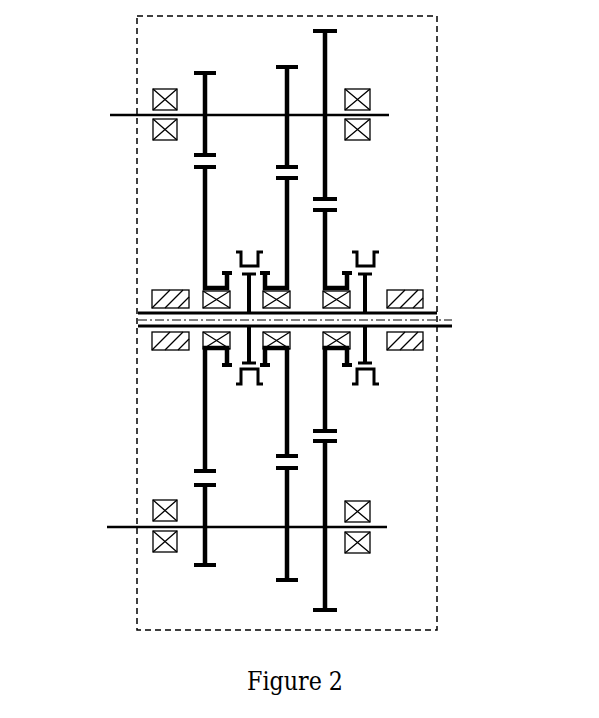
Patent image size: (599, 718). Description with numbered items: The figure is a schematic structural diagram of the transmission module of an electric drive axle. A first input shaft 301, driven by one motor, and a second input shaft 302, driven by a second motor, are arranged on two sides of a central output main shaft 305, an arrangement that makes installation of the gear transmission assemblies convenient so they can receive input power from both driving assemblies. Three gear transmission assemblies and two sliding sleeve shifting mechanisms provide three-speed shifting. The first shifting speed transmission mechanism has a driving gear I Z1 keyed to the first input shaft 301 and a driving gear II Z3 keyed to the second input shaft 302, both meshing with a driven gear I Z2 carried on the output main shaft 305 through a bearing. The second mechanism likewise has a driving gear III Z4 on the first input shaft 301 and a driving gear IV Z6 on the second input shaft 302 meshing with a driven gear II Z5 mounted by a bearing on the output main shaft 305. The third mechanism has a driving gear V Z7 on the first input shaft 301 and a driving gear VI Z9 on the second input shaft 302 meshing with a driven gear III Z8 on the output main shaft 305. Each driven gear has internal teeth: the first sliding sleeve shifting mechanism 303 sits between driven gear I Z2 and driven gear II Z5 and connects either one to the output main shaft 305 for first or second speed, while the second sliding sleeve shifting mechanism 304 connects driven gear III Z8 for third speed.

The first input shaft 301 is at (122, 113).
The second input shaft 302 is at (123, 523).
The first sliding sleeve shifting mechanism 303 is at (250, 262).
The second sliding sleeve shifting mechanism 304 is at (365, 262).
The output main shaft 305 is at (413, 342).
The driving gear I Z1 is at (215, 114).
The driven gear I Z2 is at (215, 319).
The driving gear II Z3 is at (212, 525).
The driving gear III Z4 is at (275, 117).
The driven gear II Z5 is at (277, 317).
The driving gear IV Z6 is at (276, 524).
The driving gear V Z7 is at (334, 115).
The driven gear III Z8 is at (333, 320).
The driving gear VI Z9 is at (337, 525).